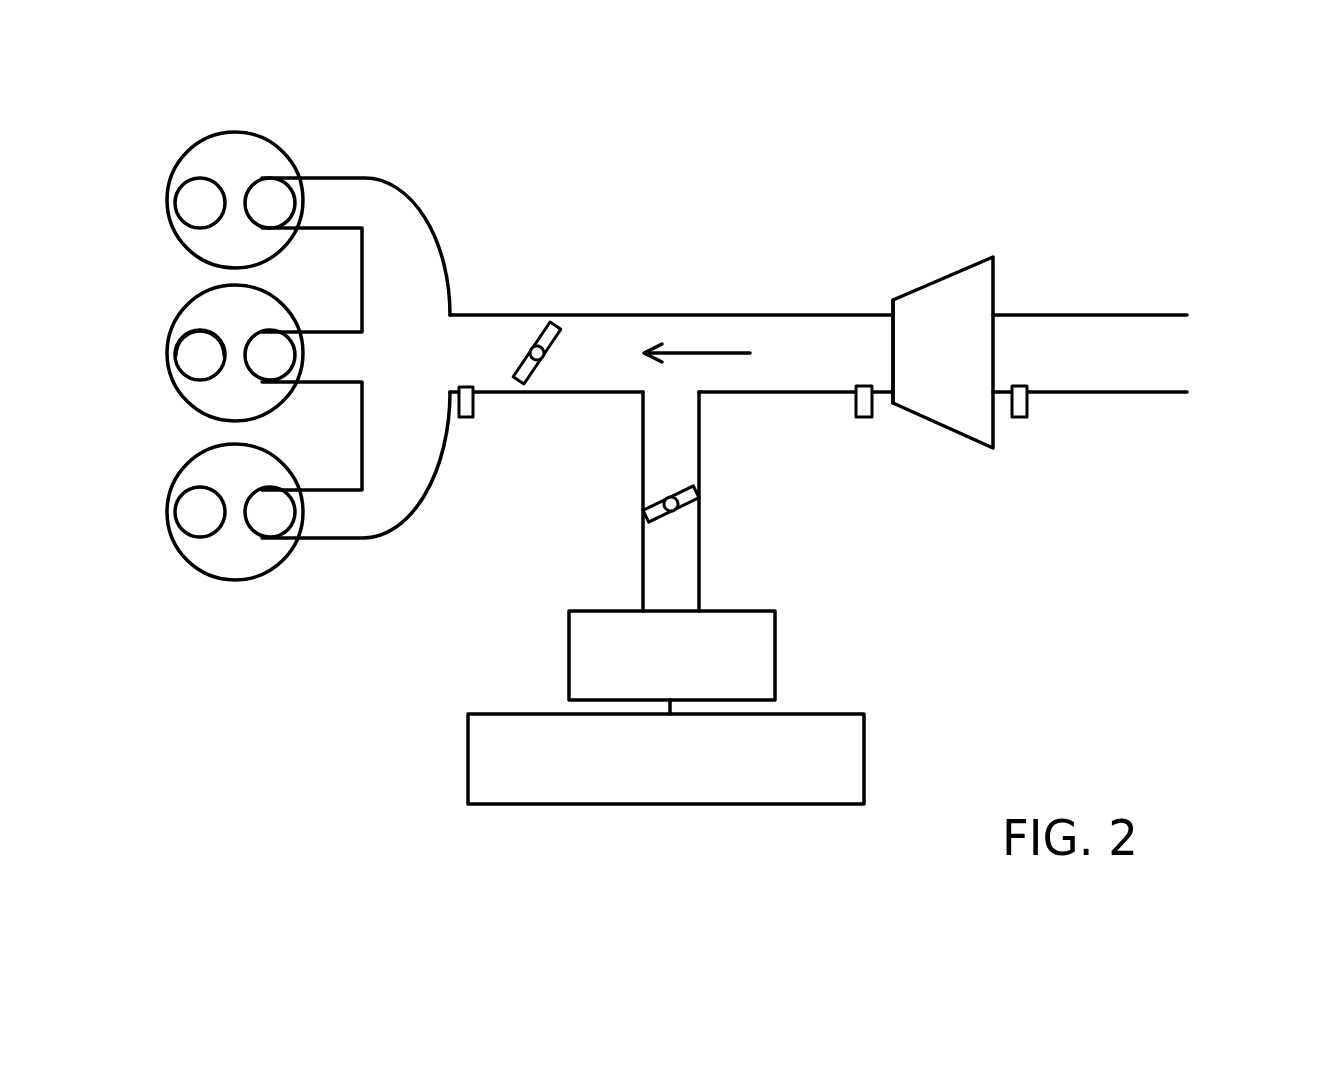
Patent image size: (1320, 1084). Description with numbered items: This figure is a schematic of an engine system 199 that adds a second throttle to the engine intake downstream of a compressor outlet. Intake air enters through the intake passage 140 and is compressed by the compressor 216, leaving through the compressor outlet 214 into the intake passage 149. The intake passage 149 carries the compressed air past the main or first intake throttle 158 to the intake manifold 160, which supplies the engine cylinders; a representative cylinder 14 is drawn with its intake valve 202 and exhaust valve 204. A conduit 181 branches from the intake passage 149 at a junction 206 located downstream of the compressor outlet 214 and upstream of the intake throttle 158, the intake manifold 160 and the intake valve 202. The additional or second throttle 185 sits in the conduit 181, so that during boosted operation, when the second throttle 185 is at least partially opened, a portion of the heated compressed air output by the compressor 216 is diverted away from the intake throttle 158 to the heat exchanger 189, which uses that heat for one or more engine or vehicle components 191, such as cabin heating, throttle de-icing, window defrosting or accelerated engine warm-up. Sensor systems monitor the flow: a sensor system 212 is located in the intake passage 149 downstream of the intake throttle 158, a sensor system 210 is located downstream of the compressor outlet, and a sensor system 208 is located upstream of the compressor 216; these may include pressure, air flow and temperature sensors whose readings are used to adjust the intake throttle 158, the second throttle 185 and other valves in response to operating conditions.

The cylinder 14 is at (186, 305).
The intake valve 202 is at (267, 355).
The exhaust valve 204 is at (202, 368).
The intake manifold 160 is at (407, 248).
The intake passage 149 is at (600, 315).
The intake throttle 158 is at (538, 345).
The compressor 216 is at (940, 278).
The compressor outlet 214 is at (893, 353).
The intake passage 140 is at (1175, 353).
The conduit 181 is at (643, 460).
The junction 206 is at (700, 400).
The second throttle 185 is at (675, 510).
The heat exchanger 189 is at (672, 655).
The engine or vehicle components 191 is at (666, 759).
The sensor system 212 is at (466, 417).
The sensor system 210 is at (864, 417).
The sensor system 208 is at (1019, 417).
The engine system 199 is at (940, 588).